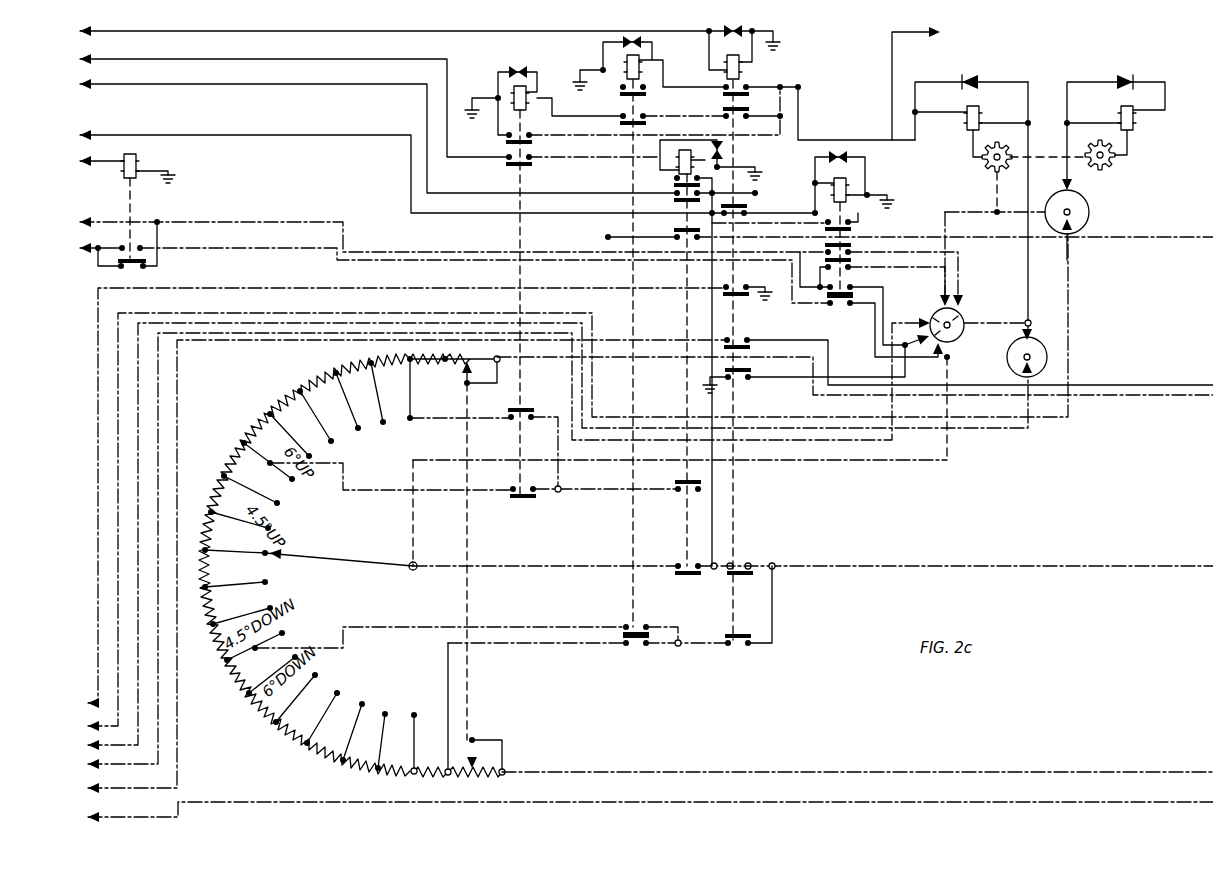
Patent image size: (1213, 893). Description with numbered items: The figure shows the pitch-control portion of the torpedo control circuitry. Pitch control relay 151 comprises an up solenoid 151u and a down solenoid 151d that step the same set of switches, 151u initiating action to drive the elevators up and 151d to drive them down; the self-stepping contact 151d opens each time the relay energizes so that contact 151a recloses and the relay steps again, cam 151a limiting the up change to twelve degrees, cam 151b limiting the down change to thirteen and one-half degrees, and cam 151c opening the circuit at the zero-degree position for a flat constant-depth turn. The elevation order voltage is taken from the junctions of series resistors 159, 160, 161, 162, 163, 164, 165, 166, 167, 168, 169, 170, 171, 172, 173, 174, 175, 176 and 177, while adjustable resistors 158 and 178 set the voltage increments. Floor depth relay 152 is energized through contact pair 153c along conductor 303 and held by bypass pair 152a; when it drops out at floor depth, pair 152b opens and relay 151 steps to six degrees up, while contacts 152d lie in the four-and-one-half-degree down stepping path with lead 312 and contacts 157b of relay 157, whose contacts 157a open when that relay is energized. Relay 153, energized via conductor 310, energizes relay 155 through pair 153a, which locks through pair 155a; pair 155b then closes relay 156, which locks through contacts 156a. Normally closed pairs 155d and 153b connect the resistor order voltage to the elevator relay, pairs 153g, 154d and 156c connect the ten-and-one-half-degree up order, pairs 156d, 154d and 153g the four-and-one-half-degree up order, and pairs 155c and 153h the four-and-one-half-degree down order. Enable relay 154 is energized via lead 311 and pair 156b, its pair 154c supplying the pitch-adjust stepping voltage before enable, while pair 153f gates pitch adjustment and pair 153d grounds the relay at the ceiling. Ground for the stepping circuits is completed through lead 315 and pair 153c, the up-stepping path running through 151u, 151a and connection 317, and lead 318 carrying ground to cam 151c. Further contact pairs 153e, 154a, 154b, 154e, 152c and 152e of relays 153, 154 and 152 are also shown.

The conductor 310 is at (268, 33).
The lead 311 is at (331, 58).
The conductor 303 is at (258, 135).
The lead 312 is at (265, 222).
The connection 317 is at (262, 248).
The lead 315 is at (278, 291).
The lead 318 is at (380, 332).
The relay 157 is at (148, 163).
The contacts 157a is at (146, 248).
The contacts 157b is at (147, 267).
The relay 156 is at (489, 66).
The contacts 156a is at (508, 141).
The contact pair 156b is at (508, 164).
The contact pair 156c is at (531, 408).
The contact pair 156d is at (530, 501).
The relay 155 is at (595, 60).
The contact pair 155a is at (612, 92).
The contact pair 155b is at (612, 118).
The contact pair 155c is at (632, 624).
The contact pair 155d is at (632, 648).
The relay 153 is at (706, 60).
The contact pair 153a is at (752, 86).
The contact pair 153b is at (752, 110).
The contact pair 153c is at (750, 211).
The contact pair 153d is at (750, 382).
The relay contact 153e is at (747, 286).
The contact pair 153f is at (748, 339).
The contact pair 153g is at (750, 561).
The contact pair 153h is at (756, 637).
The enable relay 154 is at (655, 150).
The relay contact 154a is at (672, 178).
The relay contact 154b is at (672, 196).
The contact pair 154c is at (690, 240).
The contact pair 154d is at (687, 492).
The relay contact 154e is at (680, 573).
The floor depth relay 152 is at (875, 186).
The contact pair 152a is at (860, 229).
The contact pair 152b is at (860, 248).
The relay contact 152c is at (860, 266).
The contacts 152d is at (860, 286).
The relay contact 152e is at (846, 308).
The pitch control relay 151 is at (1135, 152).
The cam 151a is at (1090, 210).
The cam 151b is at (1048, 345).
The cam 151c is at (965, 318).
The down solenoid 151d is at (982, 106).
The up solenoid 151u is at (1143, 102).
The resistor 158 is at (478, 362).
The resistor 159 is at (432, 362).
The resistor 160 is at (385, 381).
The resistor 161 is at (353, 362).
The resistor 162 is at (318, 372).
The resistor 163 is at (278, 398).
The resistor 164 is at (250, 423).
The resistor 165 is at (224, 460).
The resistor 166 is at (215, 490).
The resistor 167 is at (212, 516).
The resistor 168 is at (222, 552).
The resistor 169 is at (206, 600).
The resistor 170 is at (222, 650).
The resistor 171 is at (240, 685).
The resistor 172 is at (262, 713).
The resistor 173 is at (295, 738).
The resistor 174 is at (332, 760).
The resistor 175 is at (368, 775).
The resistor 176 is at (398, 778).
The resistor 177 is at (440, 774).
The resistor 178 is at (480, 772).